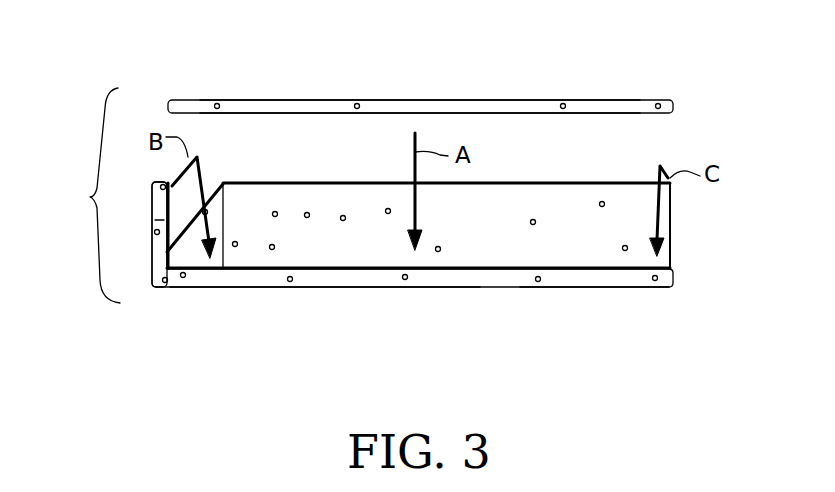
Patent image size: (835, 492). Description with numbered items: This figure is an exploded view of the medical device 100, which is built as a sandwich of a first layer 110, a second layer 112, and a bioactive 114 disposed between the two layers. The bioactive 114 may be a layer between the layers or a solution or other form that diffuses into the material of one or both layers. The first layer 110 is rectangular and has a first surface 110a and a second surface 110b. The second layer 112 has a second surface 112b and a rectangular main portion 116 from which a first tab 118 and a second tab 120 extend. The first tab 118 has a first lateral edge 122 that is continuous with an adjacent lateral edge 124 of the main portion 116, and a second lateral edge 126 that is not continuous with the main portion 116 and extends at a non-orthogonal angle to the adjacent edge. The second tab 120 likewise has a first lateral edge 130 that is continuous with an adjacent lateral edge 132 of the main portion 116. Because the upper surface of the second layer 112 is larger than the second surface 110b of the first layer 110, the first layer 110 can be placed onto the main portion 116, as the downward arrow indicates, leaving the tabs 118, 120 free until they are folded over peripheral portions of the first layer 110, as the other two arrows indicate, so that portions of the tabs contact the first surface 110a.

The medical device 100 is at (90, 197).
The first layer 110 is at (472, 100).
The first surface 110a is at (518, 100).
The second surface 110b is at (588, 114).
The second layer 112 is at (615, 287).
The second surface 112b is at (497, 287).
The bioactive 114 is at (423, 267).
The main portion 116 is at (508, 245).
The first tab 118 is at (672, 212).
The second tab 120 is at (152, 207).
The first lateral edge 122 is at (670, 243).
The lateral edge 124 is at (672, 278).
The second lateral edge 126 is at (208, 196).
The first lateral edge 130 is at (160, 217).
The lateral edge 132 is at (240, 278).